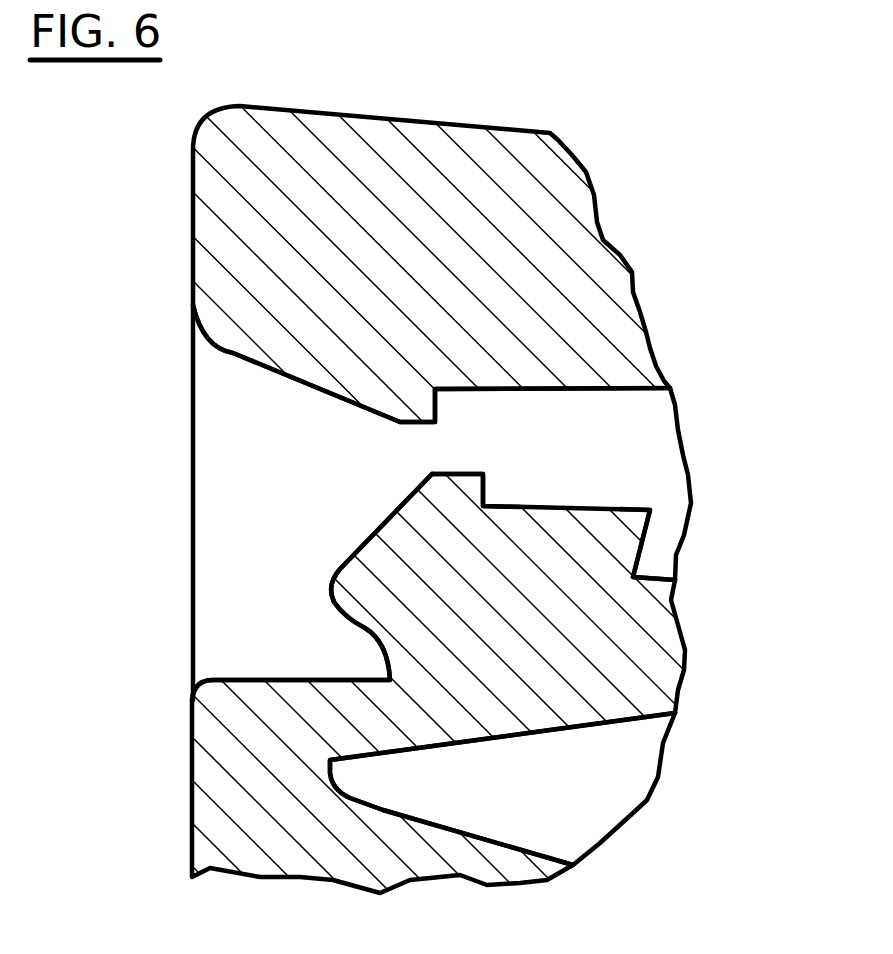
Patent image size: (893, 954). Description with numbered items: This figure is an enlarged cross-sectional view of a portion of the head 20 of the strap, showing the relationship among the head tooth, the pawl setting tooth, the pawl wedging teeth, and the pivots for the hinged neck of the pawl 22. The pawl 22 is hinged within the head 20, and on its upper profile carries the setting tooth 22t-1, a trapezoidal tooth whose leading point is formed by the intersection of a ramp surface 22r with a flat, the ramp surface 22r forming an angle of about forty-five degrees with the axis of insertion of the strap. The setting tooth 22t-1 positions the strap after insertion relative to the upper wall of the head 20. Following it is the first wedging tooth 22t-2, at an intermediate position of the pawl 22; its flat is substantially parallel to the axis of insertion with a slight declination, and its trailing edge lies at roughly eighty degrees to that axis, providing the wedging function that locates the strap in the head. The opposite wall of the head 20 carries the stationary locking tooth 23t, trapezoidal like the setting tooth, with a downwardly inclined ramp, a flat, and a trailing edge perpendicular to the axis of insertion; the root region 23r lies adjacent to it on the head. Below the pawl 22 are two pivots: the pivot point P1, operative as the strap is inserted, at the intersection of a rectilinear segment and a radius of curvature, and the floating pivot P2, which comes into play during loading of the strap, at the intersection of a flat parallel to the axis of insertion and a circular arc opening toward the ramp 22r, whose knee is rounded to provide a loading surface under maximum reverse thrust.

The head 20 is at (460, 73).
The pawl 22 is at (587, 677).
The locking tooth 23t is at (417, 403).
The root portion of first member 23r is at (270, 367).
The ramp surface 22r is at (378, 528).
The setting tooth 22t-1 is at (458, 497).
The first wedging tooth 22t-2 is at (623, 532).
The pivot point P1 is at (330, 768).
The floating pivot P2 is at (388, 672).